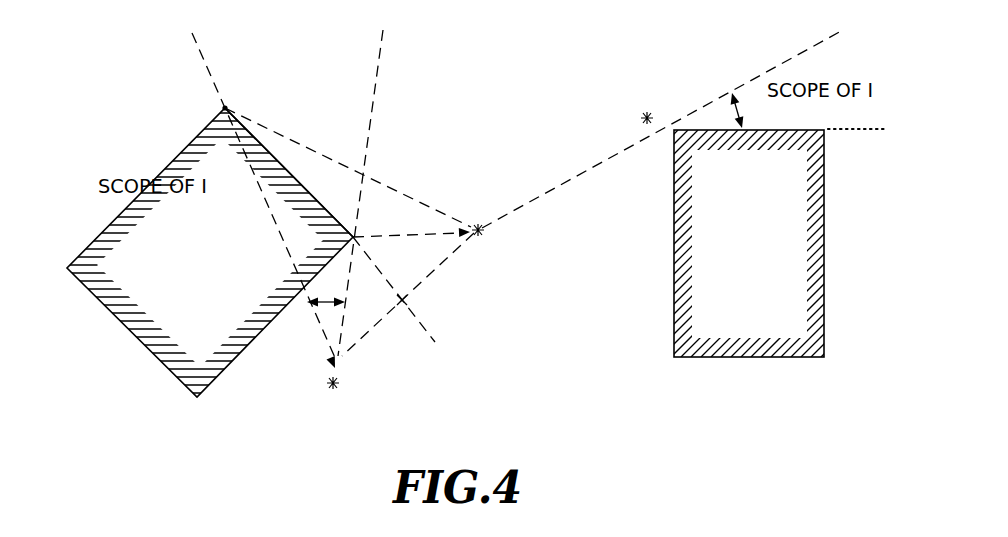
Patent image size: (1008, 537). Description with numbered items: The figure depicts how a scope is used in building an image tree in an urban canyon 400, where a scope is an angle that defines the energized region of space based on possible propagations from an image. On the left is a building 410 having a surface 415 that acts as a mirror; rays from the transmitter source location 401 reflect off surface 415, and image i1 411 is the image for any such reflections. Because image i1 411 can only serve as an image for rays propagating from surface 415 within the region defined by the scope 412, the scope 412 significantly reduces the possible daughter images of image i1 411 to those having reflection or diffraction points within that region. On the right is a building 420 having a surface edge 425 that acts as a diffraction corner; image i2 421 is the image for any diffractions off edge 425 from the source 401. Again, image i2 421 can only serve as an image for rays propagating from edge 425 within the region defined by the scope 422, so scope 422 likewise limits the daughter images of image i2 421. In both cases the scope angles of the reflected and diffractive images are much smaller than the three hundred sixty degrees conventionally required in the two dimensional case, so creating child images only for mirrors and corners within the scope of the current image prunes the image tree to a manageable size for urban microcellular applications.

The urban canyon 400 is at (521, 416).
The transmitter source location 401 is at (478, 243).
The building 410 is at (171, 372).
The image i1 411 is at (331, 394).
The scope 412 is at (306, 274).
The surface 415 is at (313, 178).
The building 420 is at (748, 358).
The image i2 421 is at (637, 110).
The scope 422 is at (737, 110).
The surface edge 425 is at (652, 102).